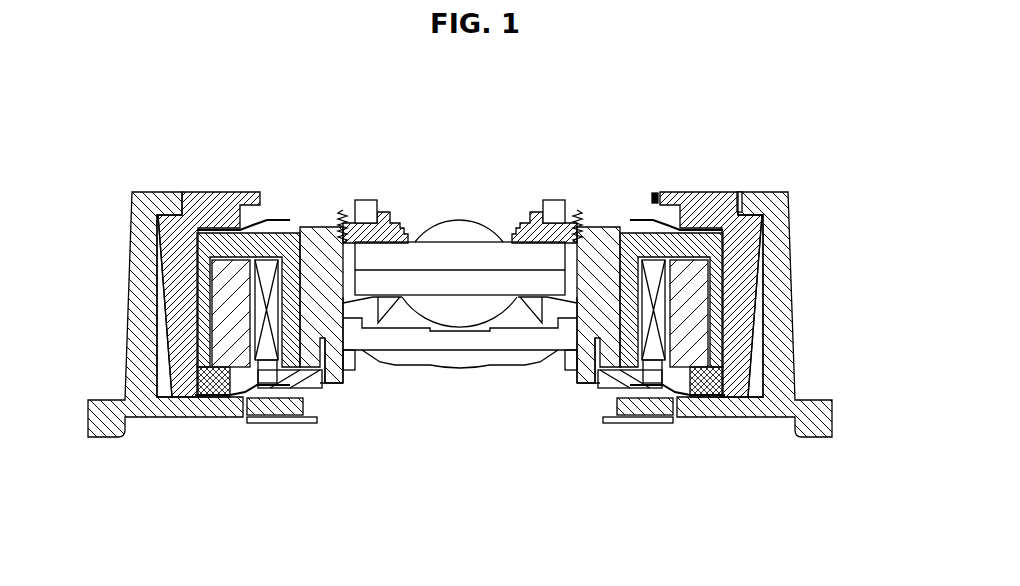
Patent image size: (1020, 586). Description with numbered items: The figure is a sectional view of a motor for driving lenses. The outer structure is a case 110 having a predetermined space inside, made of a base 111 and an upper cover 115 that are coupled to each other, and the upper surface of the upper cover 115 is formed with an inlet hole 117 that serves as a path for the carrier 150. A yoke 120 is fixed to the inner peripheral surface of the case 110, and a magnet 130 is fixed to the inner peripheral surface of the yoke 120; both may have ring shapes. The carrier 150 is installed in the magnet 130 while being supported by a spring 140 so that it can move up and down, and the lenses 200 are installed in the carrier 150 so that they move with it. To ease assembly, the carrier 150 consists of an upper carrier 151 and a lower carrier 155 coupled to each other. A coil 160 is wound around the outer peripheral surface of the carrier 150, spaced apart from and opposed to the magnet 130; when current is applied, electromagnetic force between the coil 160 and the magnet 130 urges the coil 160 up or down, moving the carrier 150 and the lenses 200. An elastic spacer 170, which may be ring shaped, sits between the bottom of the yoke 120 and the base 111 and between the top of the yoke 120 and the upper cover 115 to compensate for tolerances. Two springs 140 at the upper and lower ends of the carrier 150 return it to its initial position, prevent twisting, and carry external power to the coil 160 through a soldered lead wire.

The case 110 is at (500, 314).
The base 111 is at (775, 268).
The upper cover 115 is at (770, 217).
The inlet hole 117 is at (655, 197).
The yoke 120 is at (170, 312).
The magnet 130 is at (165, 360).
The spring 140 is at (248, 215).
The carrier 150 is at (460, 388).
The upper carrier 151 is at (340, 381).
The lower carrier 155 is at (330, 400).
The coil 160 is at (700, 296).
The spacer 170 is at (700, 233).
The lenses 200 is at (467, 237).